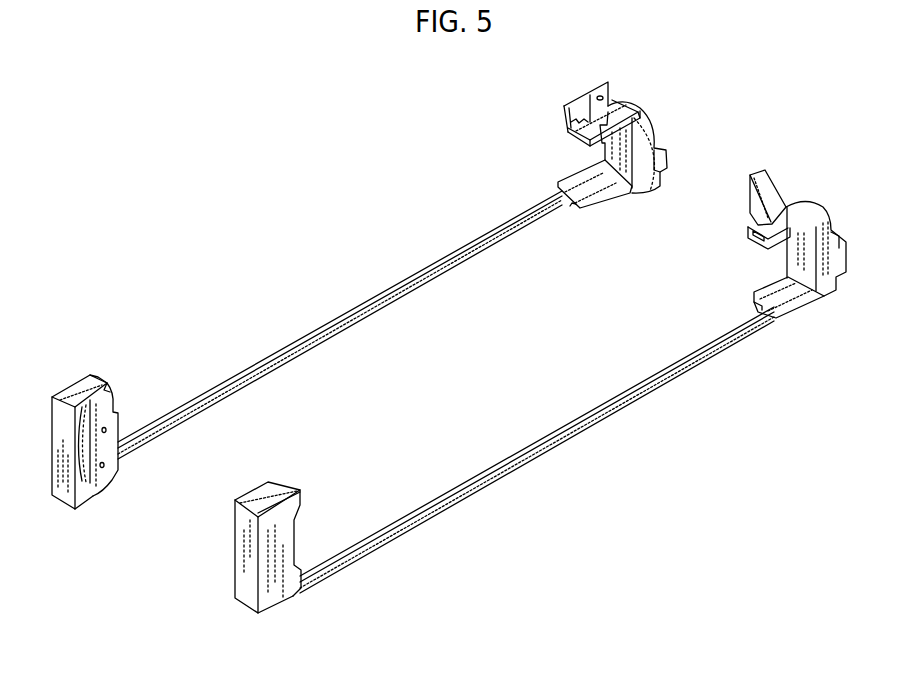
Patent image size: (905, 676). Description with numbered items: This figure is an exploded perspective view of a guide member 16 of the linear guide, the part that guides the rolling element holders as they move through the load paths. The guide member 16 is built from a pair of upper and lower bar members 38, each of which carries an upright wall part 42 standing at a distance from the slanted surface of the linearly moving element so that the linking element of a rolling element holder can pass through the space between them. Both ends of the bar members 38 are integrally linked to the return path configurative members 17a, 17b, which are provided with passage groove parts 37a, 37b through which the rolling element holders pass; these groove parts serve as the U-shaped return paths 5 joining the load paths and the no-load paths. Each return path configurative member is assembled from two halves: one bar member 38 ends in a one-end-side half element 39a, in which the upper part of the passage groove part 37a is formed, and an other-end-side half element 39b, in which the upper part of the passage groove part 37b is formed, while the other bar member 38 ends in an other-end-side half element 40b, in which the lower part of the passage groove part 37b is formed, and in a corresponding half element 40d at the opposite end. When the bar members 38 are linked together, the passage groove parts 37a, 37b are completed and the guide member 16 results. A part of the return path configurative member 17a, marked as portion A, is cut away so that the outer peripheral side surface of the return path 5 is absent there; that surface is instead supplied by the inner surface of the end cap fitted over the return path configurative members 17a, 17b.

The return path 5 is at (660, 155).
The guide member 16 is at (487, 498).
The return path configurative member 17a is at (774, 150).
The return path configurative member 17b is at (137, 577).
The passage groove part 37a is at (648, 187).
The passage groove part 37b is at (92, 460).
The bar member 38 is at (388, 294).
The one-end-side half element 39a is at (828, 296).
The other-end-side half element 39b is at (275, 487).
The other-end-side half element 40b is at (75, 383).
The right upper bracket plate 40d is at (615, 108).
The upright wall part 42 is at (457, 270).
The portion A is at (649, 110).